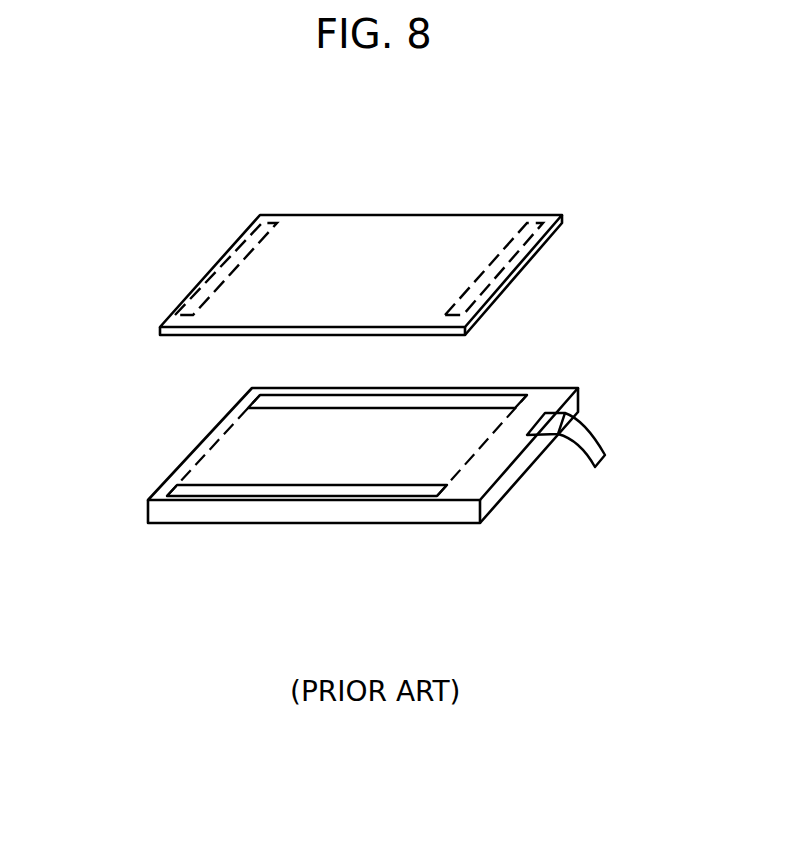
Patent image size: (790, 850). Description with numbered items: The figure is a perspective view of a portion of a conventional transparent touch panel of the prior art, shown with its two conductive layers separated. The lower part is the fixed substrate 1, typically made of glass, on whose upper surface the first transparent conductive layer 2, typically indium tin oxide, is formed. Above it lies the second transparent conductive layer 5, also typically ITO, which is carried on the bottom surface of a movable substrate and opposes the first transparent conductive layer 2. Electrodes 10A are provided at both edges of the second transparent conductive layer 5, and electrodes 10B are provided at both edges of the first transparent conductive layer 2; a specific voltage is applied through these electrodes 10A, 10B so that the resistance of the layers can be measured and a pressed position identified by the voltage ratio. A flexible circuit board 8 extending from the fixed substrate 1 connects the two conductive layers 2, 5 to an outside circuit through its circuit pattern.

The fixed substrate 1 is at (157, 513).
The first transparent conductive layer 2 is at (220, 453).
The second transparent conductive layer 5 is at (160, 331).
The flexible circuit board 8 is at (598, 441).
The electrodes 10A is at (250, 252).
The electrodes 10B is at (430, 400).